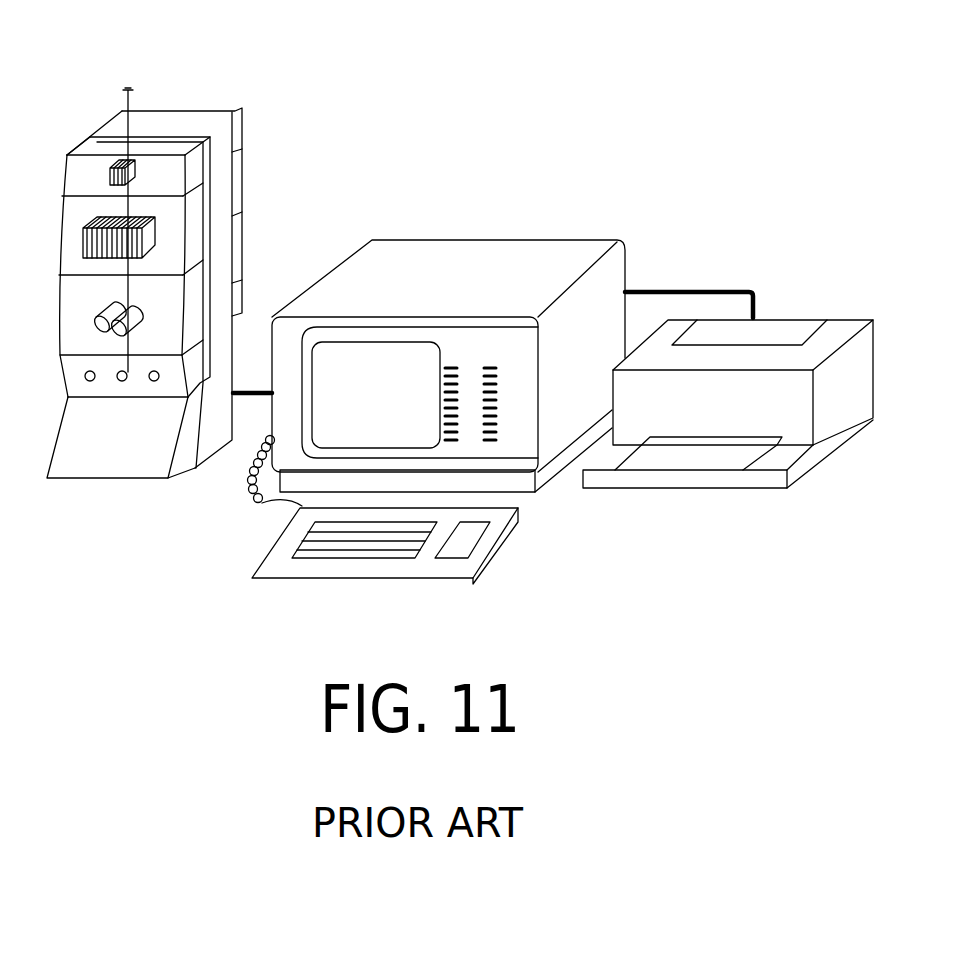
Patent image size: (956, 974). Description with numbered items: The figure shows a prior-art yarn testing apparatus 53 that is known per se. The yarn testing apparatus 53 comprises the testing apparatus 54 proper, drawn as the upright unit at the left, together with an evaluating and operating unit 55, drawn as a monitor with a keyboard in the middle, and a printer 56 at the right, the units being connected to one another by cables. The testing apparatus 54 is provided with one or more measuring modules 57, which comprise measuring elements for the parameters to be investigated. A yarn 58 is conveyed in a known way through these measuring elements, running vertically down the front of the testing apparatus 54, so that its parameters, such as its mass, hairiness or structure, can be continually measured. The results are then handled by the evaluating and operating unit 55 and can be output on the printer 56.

The yarn testing apparatus 53 is at (460, 178).
The testing apparatus 54 is at (243, 175).
The evaluating and operating unit 55 is at (557, 255).
The printer 56 is at (792, 327).
The measuring module 57 is at (165, 237).
The yarn 58 is at (128, 108).